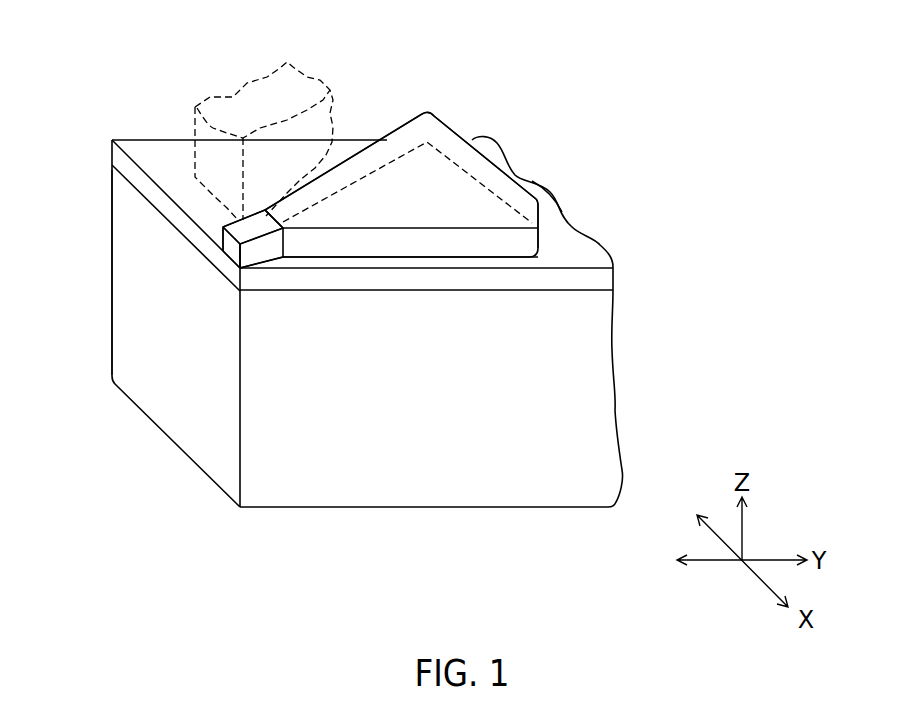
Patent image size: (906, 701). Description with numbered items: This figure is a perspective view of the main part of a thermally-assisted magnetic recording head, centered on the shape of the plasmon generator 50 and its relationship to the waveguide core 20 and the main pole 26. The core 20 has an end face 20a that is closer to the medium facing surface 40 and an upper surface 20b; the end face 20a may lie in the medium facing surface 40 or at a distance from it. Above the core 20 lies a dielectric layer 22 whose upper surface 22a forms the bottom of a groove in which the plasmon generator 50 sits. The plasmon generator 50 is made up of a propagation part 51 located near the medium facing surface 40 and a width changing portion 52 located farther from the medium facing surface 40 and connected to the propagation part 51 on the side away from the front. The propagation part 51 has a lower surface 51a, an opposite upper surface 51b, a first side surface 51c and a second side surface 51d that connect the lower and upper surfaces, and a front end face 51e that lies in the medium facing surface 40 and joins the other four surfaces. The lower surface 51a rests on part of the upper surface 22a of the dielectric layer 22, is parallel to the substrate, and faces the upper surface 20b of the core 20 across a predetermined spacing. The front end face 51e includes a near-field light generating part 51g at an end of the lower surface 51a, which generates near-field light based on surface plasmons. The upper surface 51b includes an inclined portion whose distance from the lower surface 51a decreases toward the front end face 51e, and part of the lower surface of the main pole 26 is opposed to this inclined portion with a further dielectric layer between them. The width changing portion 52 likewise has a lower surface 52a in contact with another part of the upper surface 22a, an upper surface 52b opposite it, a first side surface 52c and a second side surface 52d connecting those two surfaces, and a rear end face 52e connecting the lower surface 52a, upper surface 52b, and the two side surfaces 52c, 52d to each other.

The core 20 is at (610, 392).
The end face 20a is at (132, 323).
The upper surface 20b is at (583, 287).
The dielectric layer 22 is at (600, 245).
The upper surface 22a is at (573, 237).
The main pole 26 is at (280, 68).
The medium facing surface 40 is at (141, 353).
The plasmon generator 50 is at (310, 590).
The propagation part 51 is at (284, 261).
The lower surface 51a is at (238, 272).
The upper surface 51b is at (237, 222).
The first side surface 51c is at (260, 257).
The second side surface 51d is at (244, 220).
The front end face 51e is at (225, 238).
The near-field light generating part 51g is at (238, 255).
The width changing portion 52 is at (352, 270).
The lower surface 52a is at (428, 247).
The upper surface 52b is at (428, 157).
The first side surface 52c is at (477, 247).
The second side surface 52d is at (363, 165).
The rear end face 52e is at (507, 158).